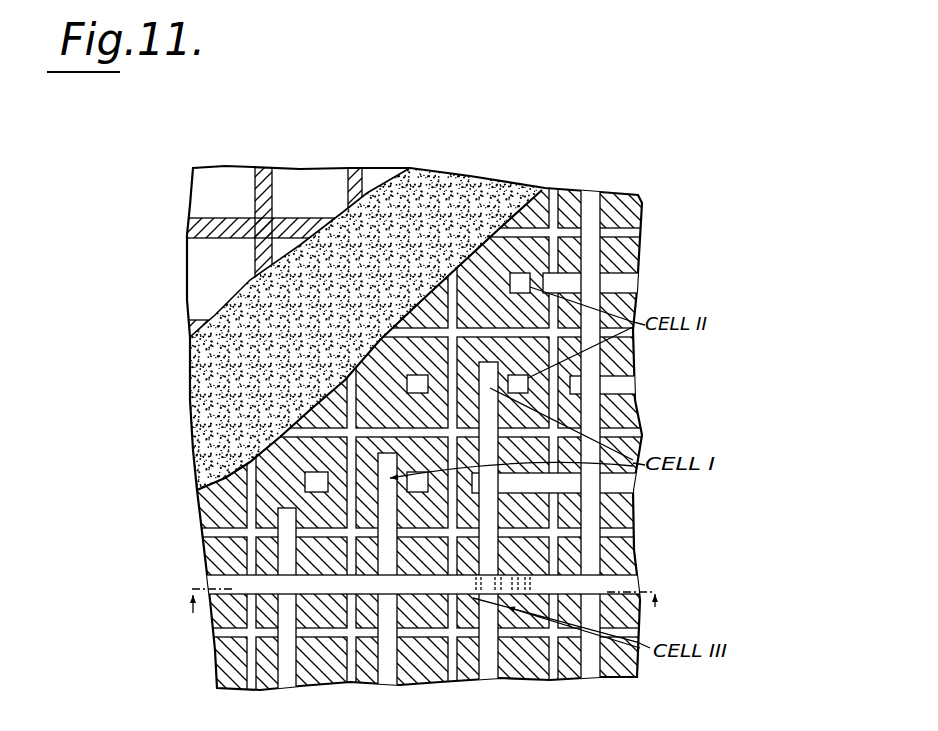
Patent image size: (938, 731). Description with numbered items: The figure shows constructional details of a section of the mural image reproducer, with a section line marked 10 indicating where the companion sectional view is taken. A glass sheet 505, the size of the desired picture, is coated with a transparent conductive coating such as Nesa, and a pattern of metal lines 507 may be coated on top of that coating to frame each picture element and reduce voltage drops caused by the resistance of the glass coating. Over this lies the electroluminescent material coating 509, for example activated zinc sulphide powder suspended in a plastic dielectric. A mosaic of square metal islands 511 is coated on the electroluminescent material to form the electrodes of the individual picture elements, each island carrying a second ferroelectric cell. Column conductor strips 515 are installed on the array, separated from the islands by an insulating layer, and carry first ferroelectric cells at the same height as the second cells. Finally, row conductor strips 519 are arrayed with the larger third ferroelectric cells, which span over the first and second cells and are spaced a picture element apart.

The glass sheet 505 is at (199, 205).
The pattern of metal lines 507 is at (263, 172).
The electroluminescent material coating 509 is at (223, 398).
The square metal islands 511 is at (523, 242).
The column conductor strips 515 is at (590, 667).
The row conductor strips 519 is at (218, 580).
The section line 10- 10 is at (425, 615).